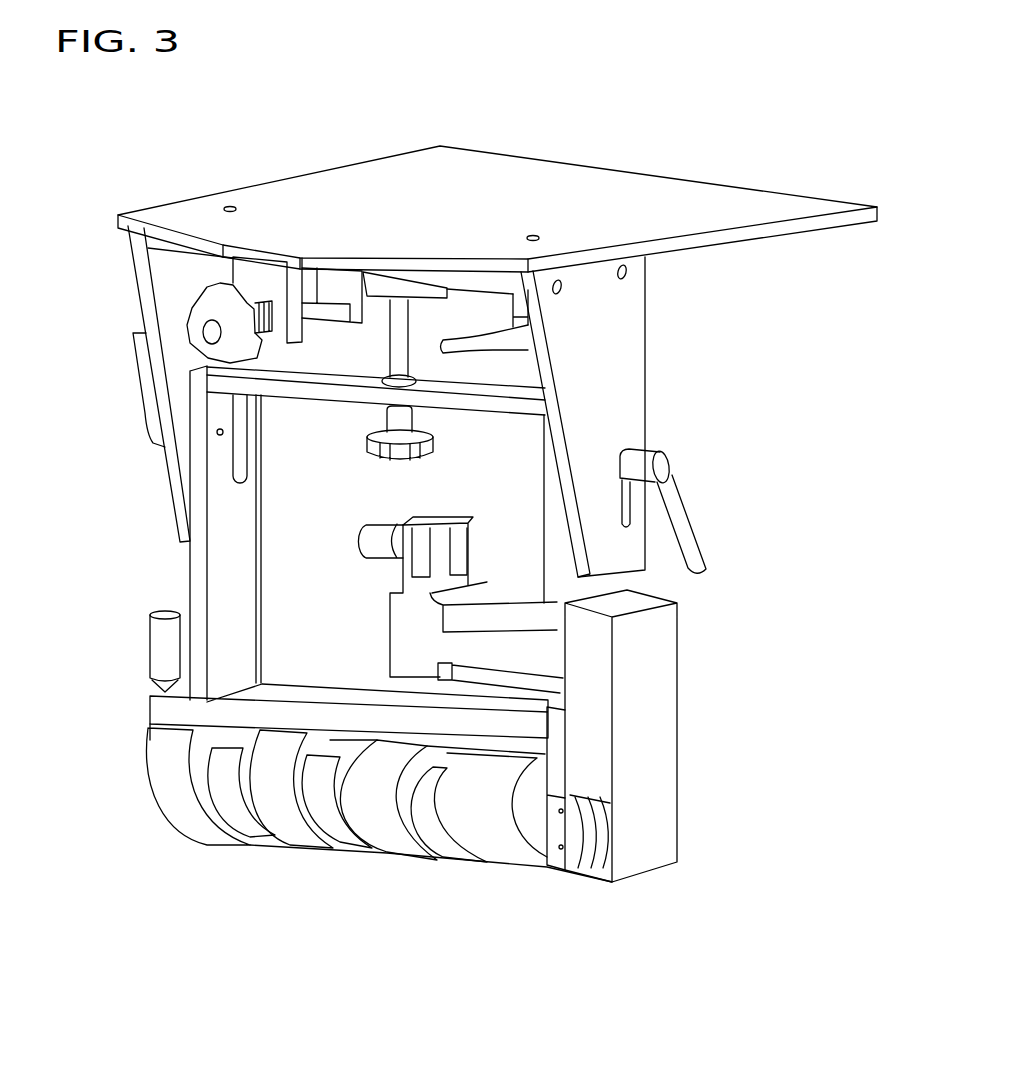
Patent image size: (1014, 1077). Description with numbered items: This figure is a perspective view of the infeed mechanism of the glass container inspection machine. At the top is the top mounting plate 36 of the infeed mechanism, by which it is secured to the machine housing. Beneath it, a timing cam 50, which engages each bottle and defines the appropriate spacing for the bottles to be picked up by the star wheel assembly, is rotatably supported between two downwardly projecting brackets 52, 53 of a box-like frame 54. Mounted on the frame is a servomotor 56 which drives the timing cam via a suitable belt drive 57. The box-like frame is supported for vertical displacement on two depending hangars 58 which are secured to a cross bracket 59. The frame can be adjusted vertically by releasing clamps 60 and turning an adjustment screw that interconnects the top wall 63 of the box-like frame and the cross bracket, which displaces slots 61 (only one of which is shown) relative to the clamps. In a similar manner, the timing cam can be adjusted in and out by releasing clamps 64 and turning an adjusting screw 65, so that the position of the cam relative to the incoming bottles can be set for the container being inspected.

The top mounting plate 36 is at (430, 218).
The timing cam 50 is at (395, 843).
The downwardly projecting bracket 52 is at (150, 728).
The downwardly projecting bracket 53 is at (560, 767).
The box-like frame 54 is at (178, 562).
The servomotor 56 is at (444, 654).
The belt drive 57 is at (666, 739).
The hangar 58 is at (163, 305).
The cross bracket 59 is at (500, 283).
The clamp 60 is at (143, 353).
The slot 61 is at (627, 528).
The top wall 63 is at (479, 404).
The clamp 64 is at (326, 323).
The adjusting screw 65 is at (398, 428).